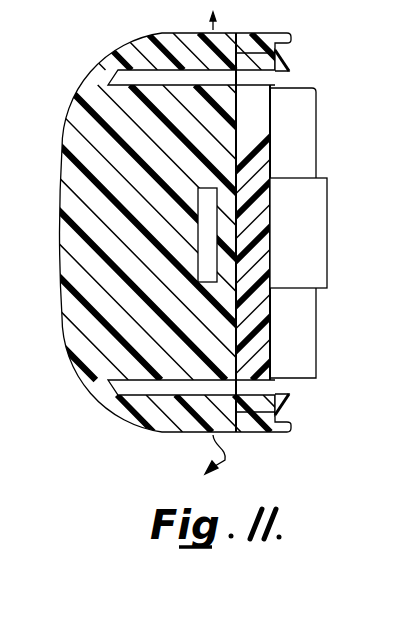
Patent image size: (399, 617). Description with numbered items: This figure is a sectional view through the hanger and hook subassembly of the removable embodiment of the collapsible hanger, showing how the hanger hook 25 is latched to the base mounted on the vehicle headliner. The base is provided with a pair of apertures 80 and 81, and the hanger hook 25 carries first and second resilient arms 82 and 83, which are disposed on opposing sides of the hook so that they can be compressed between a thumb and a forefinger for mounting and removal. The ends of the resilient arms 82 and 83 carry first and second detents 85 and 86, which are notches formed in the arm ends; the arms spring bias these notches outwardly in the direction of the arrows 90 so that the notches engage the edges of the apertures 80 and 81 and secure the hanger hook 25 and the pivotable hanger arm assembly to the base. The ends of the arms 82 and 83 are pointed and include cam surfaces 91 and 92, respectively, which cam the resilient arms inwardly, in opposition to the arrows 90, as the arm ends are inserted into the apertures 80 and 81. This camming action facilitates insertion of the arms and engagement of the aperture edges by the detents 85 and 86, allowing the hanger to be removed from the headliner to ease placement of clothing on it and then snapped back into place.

The hanger hook 25 is at (72, 133).
The aperture 80 is at (257, 82).
The aperture 81 is at (255, 390).
The first resilient arm 82 is at (200, 50).
The second resilient arm 83 is at (182, 430).
The first detent 85 is at (250, 84).
The second detent 86 is at (249, 432).
The arrows 90 is at (212, 23).
The cam surface 91 is at (282, 56).
The cam surface 92 is at (292, 405).